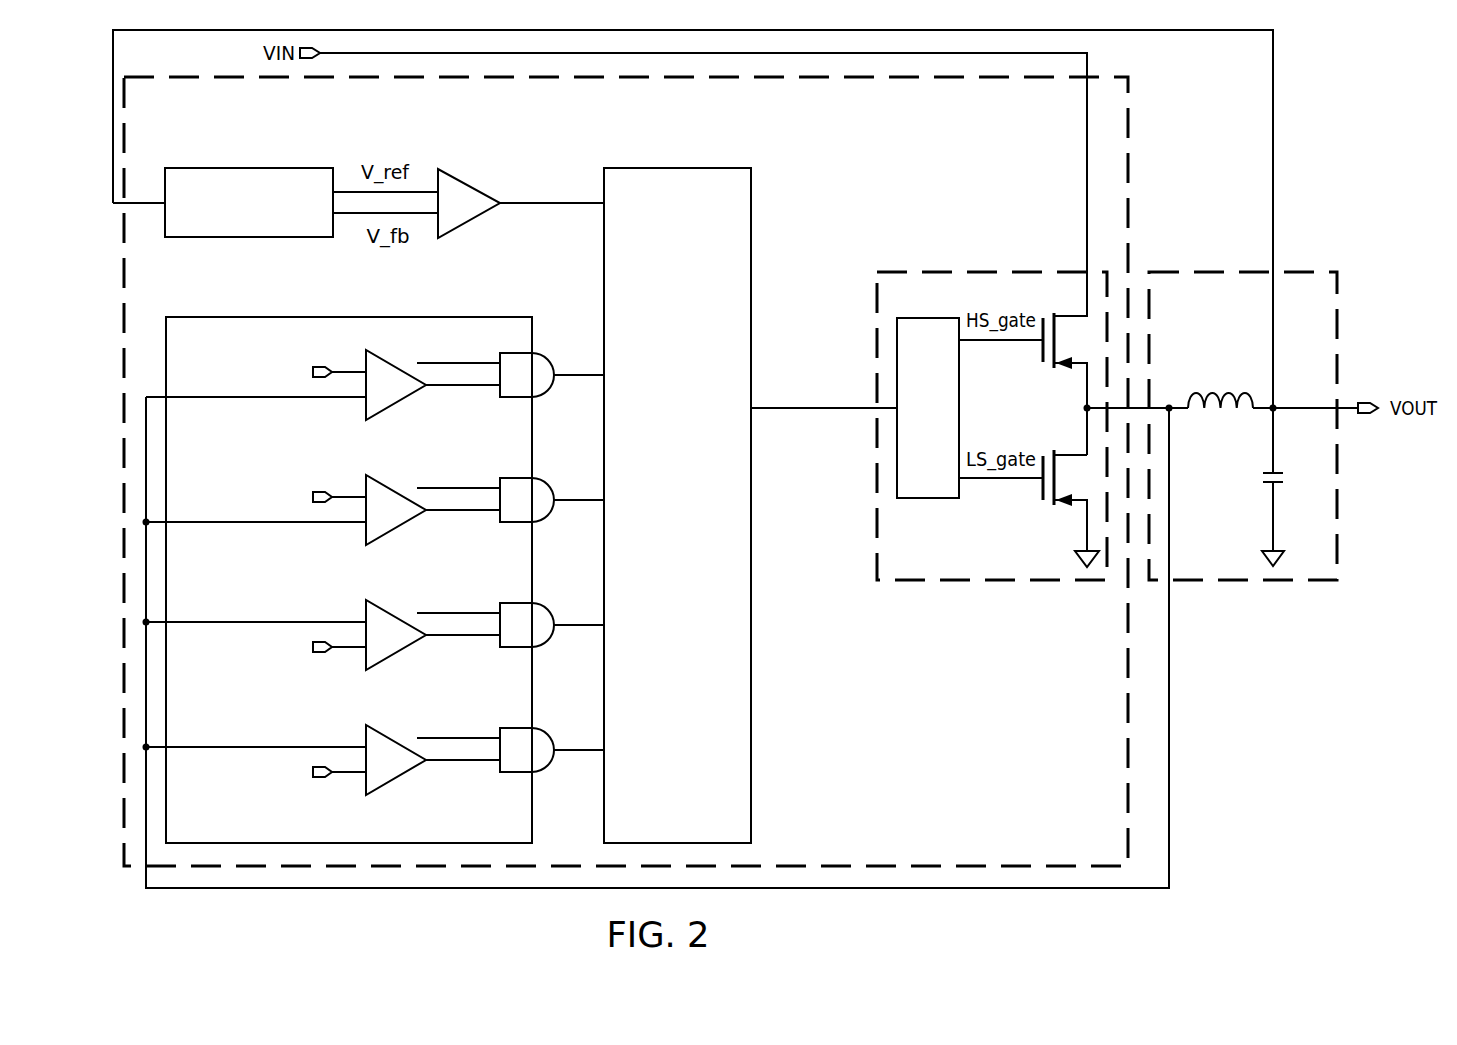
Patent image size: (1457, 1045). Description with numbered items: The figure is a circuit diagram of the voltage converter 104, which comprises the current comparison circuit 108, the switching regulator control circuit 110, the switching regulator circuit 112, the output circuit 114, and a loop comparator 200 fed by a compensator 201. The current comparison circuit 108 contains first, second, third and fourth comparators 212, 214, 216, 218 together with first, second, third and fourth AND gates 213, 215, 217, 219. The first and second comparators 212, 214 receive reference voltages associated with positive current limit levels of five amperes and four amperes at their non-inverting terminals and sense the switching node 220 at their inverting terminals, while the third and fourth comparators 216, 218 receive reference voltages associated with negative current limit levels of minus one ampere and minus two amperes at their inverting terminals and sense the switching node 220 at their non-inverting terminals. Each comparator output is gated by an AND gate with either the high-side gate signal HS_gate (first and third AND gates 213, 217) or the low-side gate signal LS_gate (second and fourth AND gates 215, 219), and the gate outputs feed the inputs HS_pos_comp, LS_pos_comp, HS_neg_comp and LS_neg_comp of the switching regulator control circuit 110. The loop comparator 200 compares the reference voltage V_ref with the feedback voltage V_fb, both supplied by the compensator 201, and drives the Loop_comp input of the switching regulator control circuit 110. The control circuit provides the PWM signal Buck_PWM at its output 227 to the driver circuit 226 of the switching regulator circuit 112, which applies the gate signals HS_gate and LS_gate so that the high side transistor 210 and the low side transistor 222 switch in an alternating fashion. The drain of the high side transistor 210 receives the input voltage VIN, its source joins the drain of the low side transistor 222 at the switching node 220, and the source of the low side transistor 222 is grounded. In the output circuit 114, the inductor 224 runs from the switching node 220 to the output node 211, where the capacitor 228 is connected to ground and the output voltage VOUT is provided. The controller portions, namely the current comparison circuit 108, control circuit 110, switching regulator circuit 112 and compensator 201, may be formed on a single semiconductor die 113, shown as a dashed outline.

The voltage converter 104 is at (1309, 94).
The current comparison circuit 108 is at (308, 308).
The switching regulator control circuit 110 is at (690, 160).
The switching regulator circuit 112 is at (1006, 591).
The semiconductor die 113 is at (1140, 190).
The output circuit 114 is at (1312, 592).
The loop comparator 200 is at (470, 226).
The compensator 201 is at (248, 167).
The high side transistor 210 is at (1040, 349).
The output node 211 is at (1279, 402).
The first comparator 212 is at (405, 407).
The first AND gate 213 is at (548, 394).
The second comparator 214 is at (405, 532).
The second AND gate 215 is at (548, 519).
The third comparator 216 is at (405, 657).
The third AND gate 217 is at (548, 644).
The fourth comparator 218 is at (405, 782).
The fourth AND gate 219 is at (548, 769).
The switching node 220 is at (1171, 400).
The low side transistor 222 is at (1040, 485).
The inductor 224 is at (1229, 390).
The driver circuit 226 is at (909, 424).
The output 227 is at (823, 412).
The capacitor 228 is at (1262, 477).